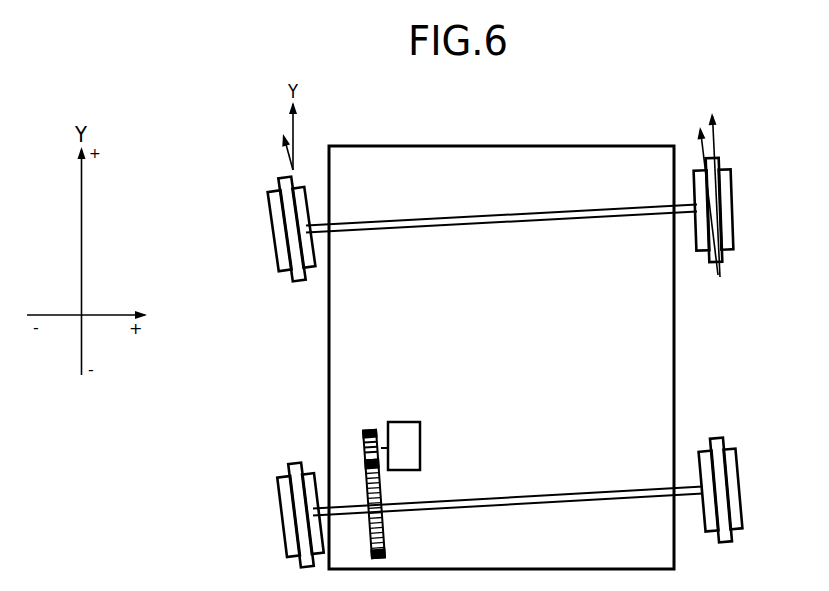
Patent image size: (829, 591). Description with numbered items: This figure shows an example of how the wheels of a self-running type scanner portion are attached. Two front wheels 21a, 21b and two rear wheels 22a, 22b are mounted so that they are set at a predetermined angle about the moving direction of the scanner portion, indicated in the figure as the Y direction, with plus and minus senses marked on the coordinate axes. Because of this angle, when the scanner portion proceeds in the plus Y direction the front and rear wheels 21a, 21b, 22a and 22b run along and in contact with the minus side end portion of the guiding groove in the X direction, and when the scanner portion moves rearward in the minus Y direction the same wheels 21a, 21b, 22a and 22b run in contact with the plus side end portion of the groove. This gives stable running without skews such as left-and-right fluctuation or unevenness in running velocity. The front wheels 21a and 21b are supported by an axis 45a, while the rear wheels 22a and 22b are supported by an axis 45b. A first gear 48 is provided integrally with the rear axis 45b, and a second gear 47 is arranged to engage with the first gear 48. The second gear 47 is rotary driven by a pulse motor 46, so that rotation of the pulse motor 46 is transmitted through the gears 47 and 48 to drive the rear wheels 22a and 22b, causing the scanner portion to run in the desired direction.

The front wheel 21a is at (271, 240).
The front wheel 21b is at (733, 193).
The rear wheel 22a is at (282, 512).
The rear wheel 22b is at (741, 485).
The axis 45a is at (510, 229).
The axis 45b is at (515, 497).
The pulse motor 46 is at (421, 438).
The second gear 47 is at (372, 429).
The first gear 48 is at (383, 540).